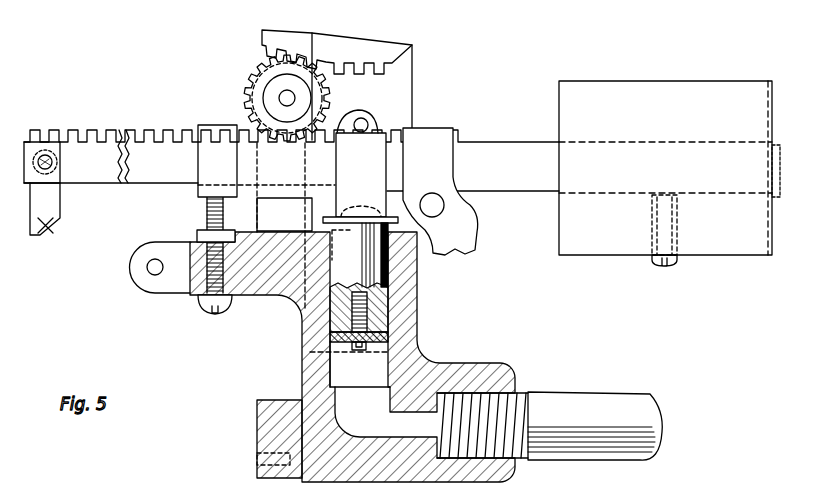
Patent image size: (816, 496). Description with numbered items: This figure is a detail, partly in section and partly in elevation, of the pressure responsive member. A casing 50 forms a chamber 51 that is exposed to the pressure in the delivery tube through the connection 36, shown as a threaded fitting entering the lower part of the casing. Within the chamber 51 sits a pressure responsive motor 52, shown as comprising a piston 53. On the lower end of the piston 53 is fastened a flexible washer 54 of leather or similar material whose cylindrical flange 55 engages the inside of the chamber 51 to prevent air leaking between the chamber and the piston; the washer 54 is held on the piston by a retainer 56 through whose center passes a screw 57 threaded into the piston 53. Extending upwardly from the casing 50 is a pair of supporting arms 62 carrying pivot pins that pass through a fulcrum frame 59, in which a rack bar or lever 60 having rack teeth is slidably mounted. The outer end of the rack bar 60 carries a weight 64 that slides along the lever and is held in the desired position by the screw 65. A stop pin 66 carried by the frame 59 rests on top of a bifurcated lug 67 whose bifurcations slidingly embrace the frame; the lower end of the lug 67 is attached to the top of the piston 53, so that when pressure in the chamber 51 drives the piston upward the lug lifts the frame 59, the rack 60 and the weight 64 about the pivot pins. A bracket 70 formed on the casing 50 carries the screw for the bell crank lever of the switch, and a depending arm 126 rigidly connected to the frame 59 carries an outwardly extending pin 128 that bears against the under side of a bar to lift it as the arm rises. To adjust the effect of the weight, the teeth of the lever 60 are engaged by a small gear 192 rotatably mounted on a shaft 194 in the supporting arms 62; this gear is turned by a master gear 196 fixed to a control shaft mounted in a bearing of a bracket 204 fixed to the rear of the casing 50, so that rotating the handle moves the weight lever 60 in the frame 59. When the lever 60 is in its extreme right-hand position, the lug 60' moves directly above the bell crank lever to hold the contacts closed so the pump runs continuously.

The connection 36 is at (565, 407).
The casing 50 is at (460, 363).
The chamber 51 is at (377, 365).
The pressure responsive motor 52 is at (383, 300).
The piston 53 is at (378, 321).
The flexible washer 54 is at (333, 356).
The cylindrical flange 55 is at (335, 337).
The retainer 56 is at (372, 343).
The screw 57 is at (352, 345).
The fulcrum frame 59 is at (380, 116).
The rack bar 60 is at (291, 145).
The lug 60' is at (60, 205).
The supporting arms 62 is at (270, 210).
The weight 64 is at (620, 90).
The screw 65 is at (670, 262).
The stop pin 66 is at (361, 124).
The bifurcated lug 67 is at (383, 130).
The bracket 70 is at (253, 280).
The depending arm 126 is at (463, 237).
The pin 128 is at (442, 214).
The gear 192 is at (252, 78).
The shaft 194 is at (282, 98).
The master gear 196 is at (286, 40).
The bracket 204 is at (410, 67).